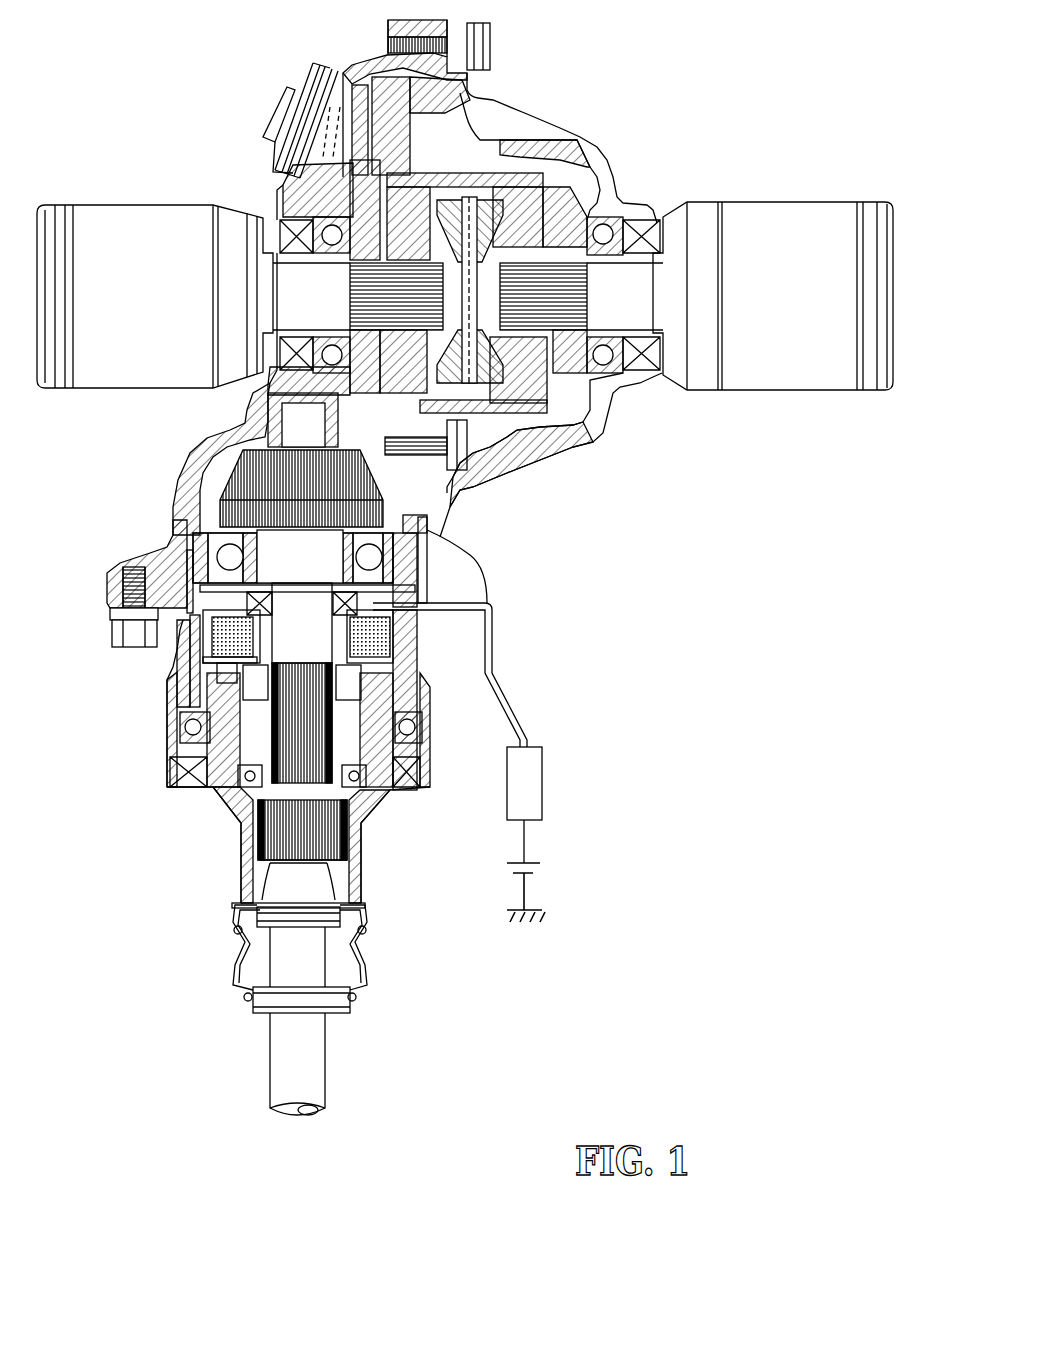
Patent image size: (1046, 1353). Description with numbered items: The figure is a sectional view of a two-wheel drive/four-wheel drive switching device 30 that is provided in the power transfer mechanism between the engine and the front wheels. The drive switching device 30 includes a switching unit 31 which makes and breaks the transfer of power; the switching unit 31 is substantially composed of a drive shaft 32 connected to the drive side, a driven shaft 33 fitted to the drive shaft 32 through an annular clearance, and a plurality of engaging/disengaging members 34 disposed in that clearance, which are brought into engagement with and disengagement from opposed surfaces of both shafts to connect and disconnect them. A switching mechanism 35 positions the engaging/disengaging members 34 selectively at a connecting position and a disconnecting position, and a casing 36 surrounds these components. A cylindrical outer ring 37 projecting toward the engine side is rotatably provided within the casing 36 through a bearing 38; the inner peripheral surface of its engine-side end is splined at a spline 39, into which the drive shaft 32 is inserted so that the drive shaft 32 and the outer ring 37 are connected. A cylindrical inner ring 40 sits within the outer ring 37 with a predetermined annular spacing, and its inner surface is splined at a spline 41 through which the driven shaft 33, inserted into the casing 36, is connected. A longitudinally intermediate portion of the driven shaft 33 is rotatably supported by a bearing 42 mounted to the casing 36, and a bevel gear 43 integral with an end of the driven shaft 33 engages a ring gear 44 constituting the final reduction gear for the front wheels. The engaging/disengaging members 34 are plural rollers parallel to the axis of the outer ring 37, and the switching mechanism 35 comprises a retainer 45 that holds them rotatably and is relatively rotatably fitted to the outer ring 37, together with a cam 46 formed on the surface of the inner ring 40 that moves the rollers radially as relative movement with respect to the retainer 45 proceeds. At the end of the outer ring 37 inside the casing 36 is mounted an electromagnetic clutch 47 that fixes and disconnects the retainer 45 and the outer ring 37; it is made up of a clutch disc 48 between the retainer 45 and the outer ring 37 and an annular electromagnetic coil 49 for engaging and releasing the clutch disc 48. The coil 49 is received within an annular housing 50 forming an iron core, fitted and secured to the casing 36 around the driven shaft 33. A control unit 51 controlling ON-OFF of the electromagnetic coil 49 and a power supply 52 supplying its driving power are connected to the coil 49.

The two-wheel drive/four-wheel drive switching device 30 is at (442, 584).
The switching unit 31 is at (398, 792).
The drive shaft 32 is at (313, 1077).
The driven shaft 33 is at (267, 560).
The engaging/disengaging members 34 is at (180, 780).
The switching mechanism 35 is at (220, 675).
The casing 36 is at (190, 653).
The outer ring 37 is at (367, 878).
The bearing 38 is at (190, 723).
The spline 39 is at (260, 867).
The inner ring 40 is at (240, 795).
The spline 41 is at (283, 707).
The bearing 42 is at (423, 543).
The bevel gear 43 is at (233, 470).
The ring gear 44 is at (470, 488).
The retainer 45 is at (410, 685).
The cam 46 is at (350, 735).
The electromagnetic clutch 47 is at (410, 639).
The clutch disc 48 is at (395, 645).
The electromagnetic coil 49 is at (395, 630).
The housing 50 is at (207, 677).
The control unit 51 is at (530, 797).
The power supply 52 is at (540, 870).